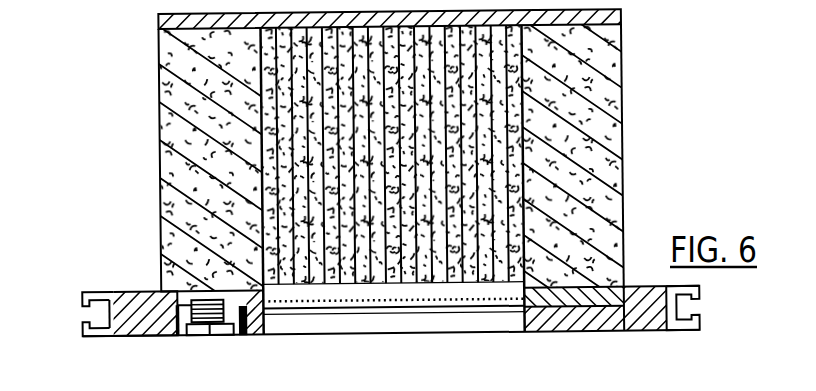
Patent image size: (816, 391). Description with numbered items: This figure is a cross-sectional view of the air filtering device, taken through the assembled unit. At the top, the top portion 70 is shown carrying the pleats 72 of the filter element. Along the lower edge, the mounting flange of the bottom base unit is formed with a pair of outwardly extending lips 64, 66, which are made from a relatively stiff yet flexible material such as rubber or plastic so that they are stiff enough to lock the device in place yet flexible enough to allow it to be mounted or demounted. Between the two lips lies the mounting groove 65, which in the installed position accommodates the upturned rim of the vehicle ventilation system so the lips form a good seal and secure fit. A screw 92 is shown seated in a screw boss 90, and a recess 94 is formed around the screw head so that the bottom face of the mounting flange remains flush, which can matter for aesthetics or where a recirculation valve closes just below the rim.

The top portion 70 is at (622, 14).
The pleats 72 is at (623, 115).
The mounting lip 64 is at (90, 293).
The mounting groove 65 is at (93, 308).
The mounting lip 66 is at (93, 337).
The screw boss 90 is at (174, 318).
The screw 92 is at (229, 337).
The recess 94 is at (245, 334).